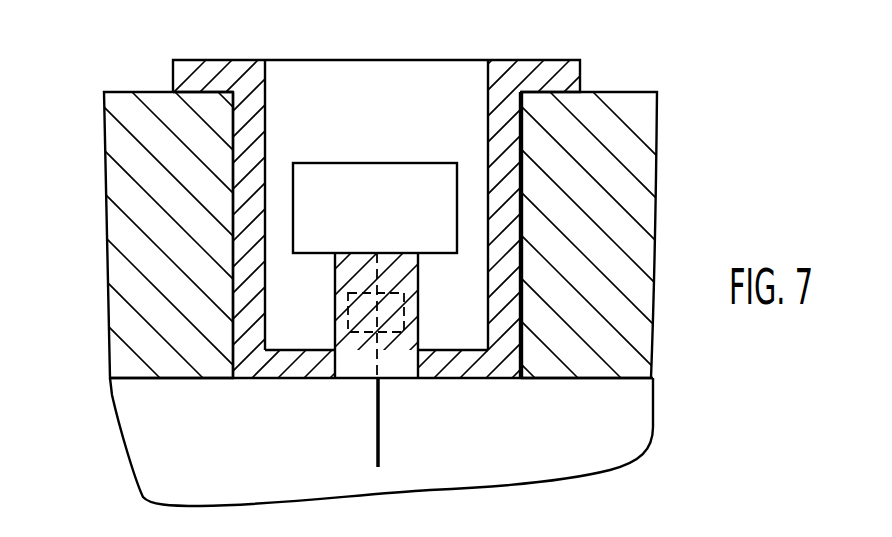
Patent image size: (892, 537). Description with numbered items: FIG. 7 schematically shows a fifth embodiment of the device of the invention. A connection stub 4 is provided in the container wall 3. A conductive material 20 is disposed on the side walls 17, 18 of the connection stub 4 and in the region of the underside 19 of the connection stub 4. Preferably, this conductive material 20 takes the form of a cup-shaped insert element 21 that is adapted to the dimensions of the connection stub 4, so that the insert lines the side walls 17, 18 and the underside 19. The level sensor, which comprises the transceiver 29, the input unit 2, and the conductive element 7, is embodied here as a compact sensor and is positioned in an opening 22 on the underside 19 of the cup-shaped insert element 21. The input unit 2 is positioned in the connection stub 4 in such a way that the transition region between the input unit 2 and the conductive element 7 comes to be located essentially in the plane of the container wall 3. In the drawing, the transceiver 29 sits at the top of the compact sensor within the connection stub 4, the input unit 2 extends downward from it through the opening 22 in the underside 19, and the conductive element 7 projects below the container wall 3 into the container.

The input unit 2 is at (422, 307).
The container wall 3 is at (130, 238).
The connection stub 4 is at (252, 235).
The conductive element 7 is at (380, 456).
The side wall 17 is at (497, 105).
The side wall 18 is at (257, 127).
The underside 19 is at (467, 381).
The conductive material 20 is at (394, 244).
The cup-shaped insert element 21 is at (531, 72).
The opening 22 is at (340, 360).
The transceiver 29 is at (365, 183).